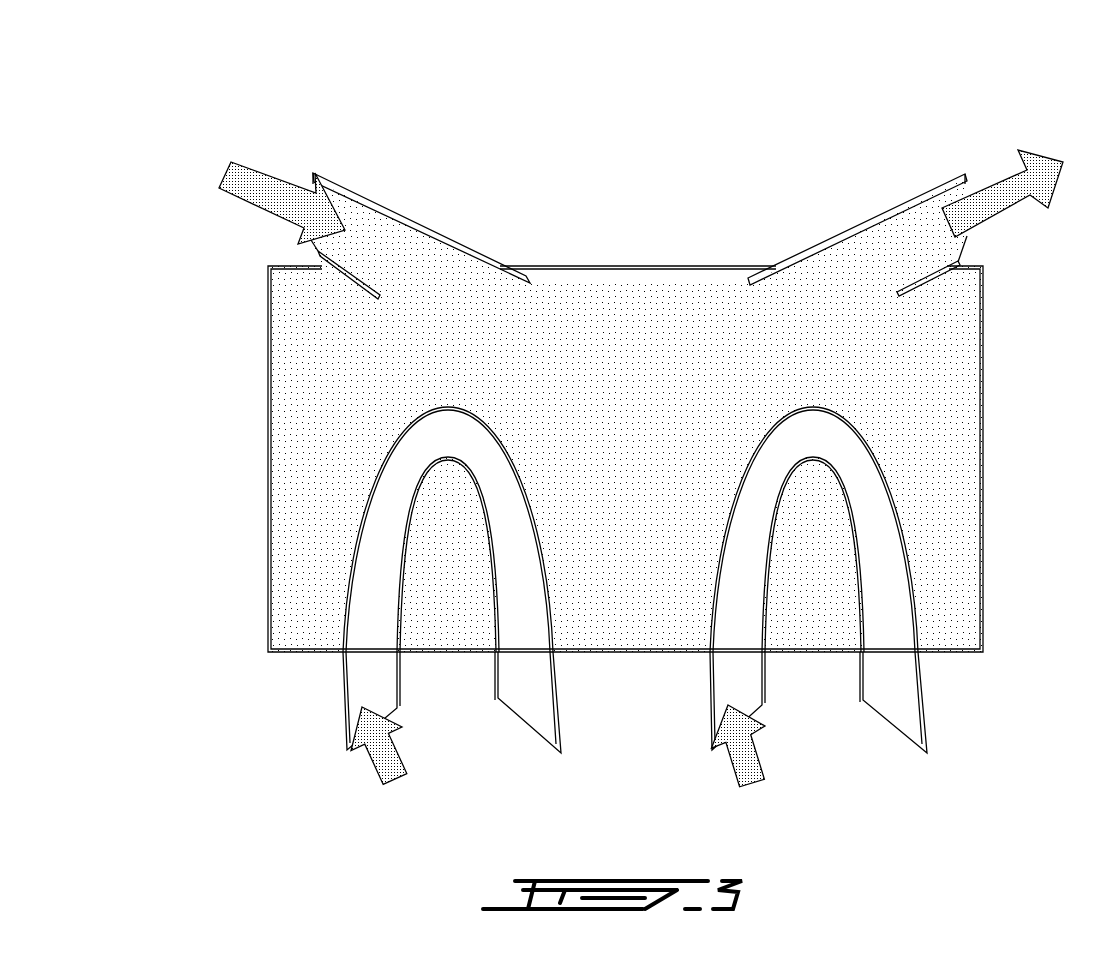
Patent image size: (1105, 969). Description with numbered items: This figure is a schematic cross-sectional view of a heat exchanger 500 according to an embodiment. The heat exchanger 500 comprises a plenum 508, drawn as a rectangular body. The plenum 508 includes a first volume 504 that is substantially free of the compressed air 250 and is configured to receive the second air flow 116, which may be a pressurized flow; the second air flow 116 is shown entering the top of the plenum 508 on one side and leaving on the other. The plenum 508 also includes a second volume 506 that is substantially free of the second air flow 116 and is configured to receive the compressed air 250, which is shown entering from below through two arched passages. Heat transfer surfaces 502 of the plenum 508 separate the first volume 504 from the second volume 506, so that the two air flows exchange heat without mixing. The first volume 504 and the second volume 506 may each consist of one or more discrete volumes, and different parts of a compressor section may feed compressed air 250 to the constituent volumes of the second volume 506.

The heat exchanger 500 is at (773, 123).
The second air flow 116 is at (265, 196).
The plenum 508 is at (268, 462).
The first volume 504 is at (310, 580).
The second volume 506 is at (373, 652).
The heat transfer surfaces 502 is at (715, 578).
The compressed air 250 is at (372, 755).